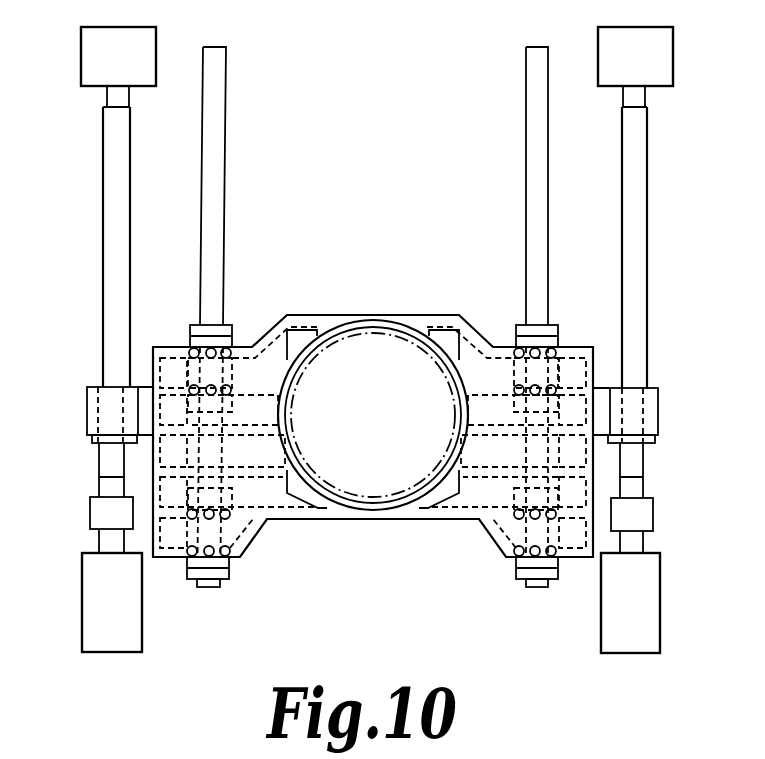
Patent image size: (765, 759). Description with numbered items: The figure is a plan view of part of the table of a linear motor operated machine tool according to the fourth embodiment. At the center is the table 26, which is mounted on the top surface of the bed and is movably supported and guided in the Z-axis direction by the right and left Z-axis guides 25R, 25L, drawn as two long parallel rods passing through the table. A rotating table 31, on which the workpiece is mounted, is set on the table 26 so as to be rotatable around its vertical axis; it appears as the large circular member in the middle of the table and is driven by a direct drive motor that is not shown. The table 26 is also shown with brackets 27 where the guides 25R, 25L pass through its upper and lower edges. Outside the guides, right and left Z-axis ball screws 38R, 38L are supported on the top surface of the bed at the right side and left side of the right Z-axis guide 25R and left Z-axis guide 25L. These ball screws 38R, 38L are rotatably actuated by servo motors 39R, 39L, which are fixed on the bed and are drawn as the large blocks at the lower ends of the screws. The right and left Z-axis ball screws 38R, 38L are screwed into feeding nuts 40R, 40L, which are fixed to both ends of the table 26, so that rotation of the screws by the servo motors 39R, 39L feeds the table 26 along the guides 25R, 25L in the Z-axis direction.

The left Z-axis guide 25L is at (222, 147).
The right Z-axis guide 25R is at (530, 147).
The table 26 is at (280, 497).
The rod bracket 27 is at (233, 333).
The rotating table 31 is at (373, 477).
The left Z-axis ball screw 38L is at (116, 190).
The right Z-axis ball screw 38R is at (638, 192).
The left servo motor 39L is at (87, 597).
The right servo motor 39R is at (655, 597).
The left feeding nut 40L is at (92, 443).
The right feeding nut 40R is at (655, 438).